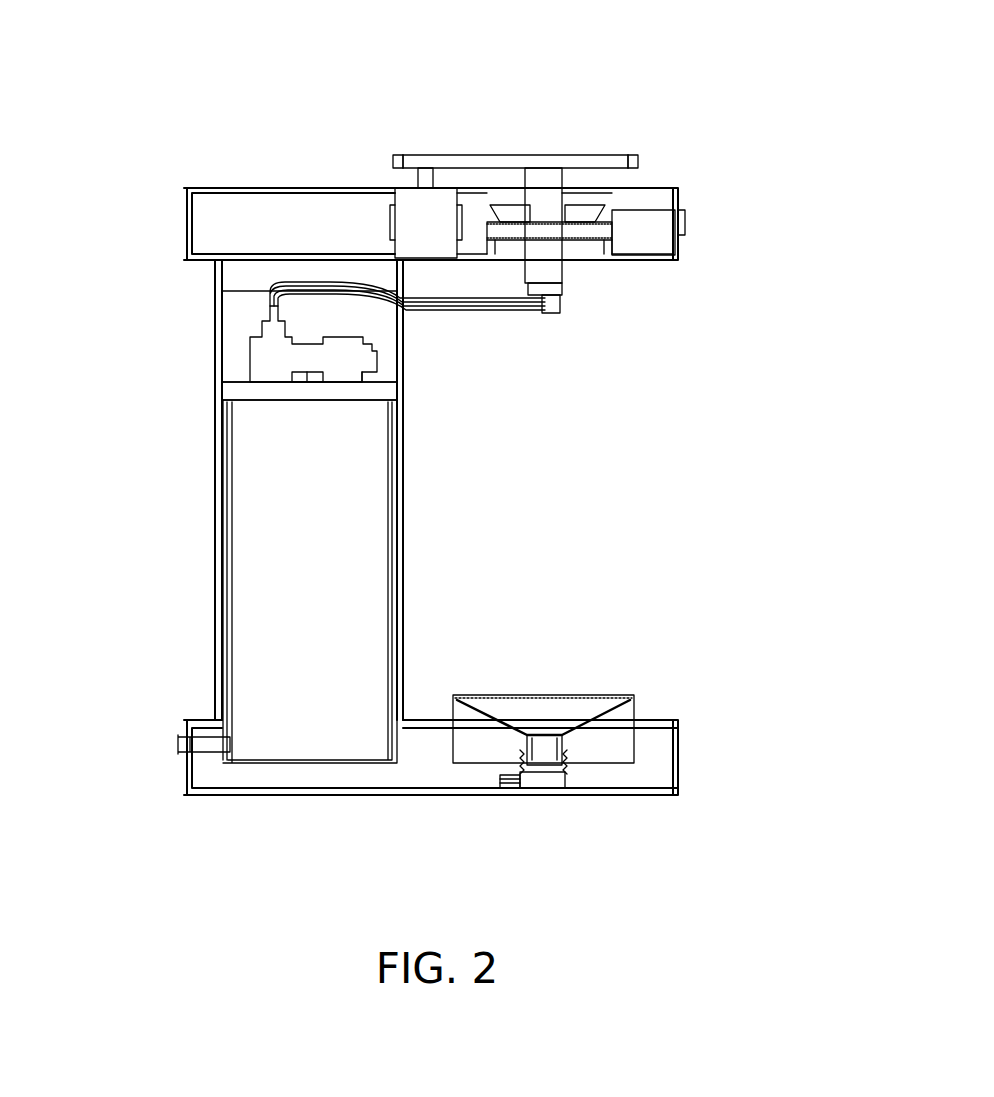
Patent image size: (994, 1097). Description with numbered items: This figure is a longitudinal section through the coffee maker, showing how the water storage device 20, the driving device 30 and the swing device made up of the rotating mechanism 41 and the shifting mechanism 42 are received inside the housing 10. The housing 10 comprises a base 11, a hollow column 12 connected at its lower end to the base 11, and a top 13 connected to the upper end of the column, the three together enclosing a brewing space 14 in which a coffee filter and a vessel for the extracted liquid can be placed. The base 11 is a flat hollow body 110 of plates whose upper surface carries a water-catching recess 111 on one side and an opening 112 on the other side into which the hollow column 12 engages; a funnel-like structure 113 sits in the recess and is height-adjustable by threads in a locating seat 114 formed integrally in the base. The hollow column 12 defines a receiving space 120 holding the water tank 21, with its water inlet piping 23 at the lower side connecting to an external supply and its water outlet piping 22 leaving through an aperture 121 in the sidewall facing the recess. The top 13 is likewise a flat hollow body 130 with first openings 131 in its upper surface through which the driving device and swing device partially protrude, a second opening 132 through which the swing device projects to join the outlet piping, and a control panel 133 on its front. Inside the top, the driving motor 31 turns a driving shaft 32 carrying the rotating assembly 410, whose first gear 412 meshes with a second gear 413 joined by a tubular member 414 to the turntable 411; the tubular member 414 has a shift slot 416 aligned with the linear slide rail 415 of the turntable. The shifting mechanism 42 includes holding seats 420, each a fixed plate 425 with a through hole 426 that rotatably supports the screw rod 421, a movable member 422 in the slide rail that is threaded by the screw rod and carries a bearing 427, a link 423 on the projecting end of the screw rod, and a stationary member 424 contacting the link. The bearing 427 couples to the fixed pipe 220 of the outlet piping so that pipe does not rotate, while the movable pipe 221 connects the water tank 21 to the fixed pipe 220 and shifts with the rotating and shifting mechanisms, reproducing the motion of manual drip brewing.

The housing 10 is at (150, 455).
The base 11 is at (650, 797).
The hollow column 12 is at (215, 505).
The top 13 is at (205, 187).
The brewing space 14 is at (575, 505).
The water storage device 20 is at (425, 660).
The water tank 21 is at (360, 560).
The water outlet piping 22 is at (392, 340).
The water inlet piping 23 is at (180, 744).
The driving device 30 is at (375, 170).
The driving motor 31 is at (410, 214).
The driving shaft 32 is at (425, 170).
The rotating mechanism 41 is at (592, 175).
The shifting mechanism 42 is at (530, 155).
The flat hollow body 110 is at (305, 777).
The water-catching recess 111 is at (572, 692).
The opening 112 is at (398, 730).
The funnel-like structure 113 is at (565, 748).
The locating seat 114 is at (560, 797).
The receiving space 120 is at (240, 320).
The aperture 121 is at (390, 312).
The flat hollow body 130 is at (262, 218).
The first openings 131 is at (444, 155).
The second opening 132 is at (630, 262).
The control panel 133 is at (655, 190).
The fixed pipe 220 is at (547, 314).
The movable pipe 221 is at (468, 298).
The rotating assembly 410 is at (468, 155).
The turntable 411 is at (612, 262).
The first gear 412 is at (432, 155).
The second gear 413 is at (580, 155).
The tubular member 414 is at (550, 172).
The linear slide rail 415 is at (590, 250).
The shift slot 416 is at (580, 242).
The holding seats 420 is at (493, 205).
The screw rod 421 is at (562, 262).
The movable member 422 is at (535, 262).
The link 423 is at (505, 262).
The stationary member 424 is at (600, 212).
The fixed plate 425 is at (630, 262).
The through hole 426 is at (685, 218).
The bearing 427 is at (556, 300).